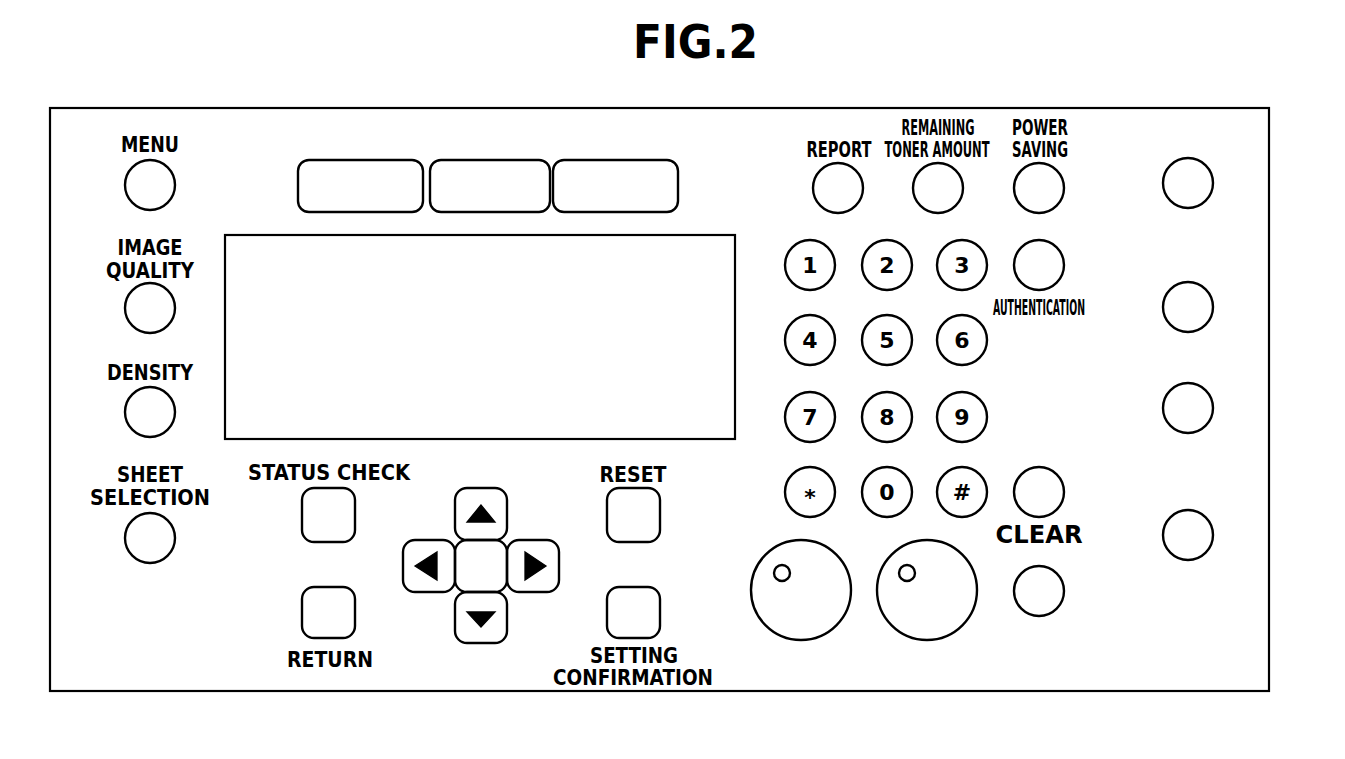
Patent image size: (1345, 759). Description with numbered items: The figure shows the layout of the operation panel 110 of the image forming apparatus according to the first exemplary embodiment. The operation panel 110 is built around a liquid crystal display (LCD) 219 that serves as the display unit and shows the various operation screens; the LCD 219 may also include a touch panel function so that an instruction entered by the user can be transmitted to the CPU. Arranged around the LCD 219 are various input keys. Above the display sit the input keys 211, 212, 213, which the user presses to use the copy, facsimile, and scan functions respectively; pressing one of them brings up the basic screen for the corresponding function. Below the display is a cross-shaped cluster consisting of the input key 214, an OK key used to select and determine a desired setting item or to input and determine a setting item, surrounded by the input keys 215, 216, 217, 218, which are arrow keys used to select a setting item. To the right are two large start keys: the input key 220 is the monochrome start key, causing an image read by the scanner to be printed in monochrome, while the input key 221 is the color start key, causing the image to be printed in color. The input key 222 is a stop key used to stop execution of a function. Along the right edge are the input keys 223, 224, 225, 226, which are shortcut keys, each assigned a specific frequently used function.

The operation panel 110 is at (288, 108).
The input key 211 is at (332, 160).
The input key 212 is at (465, 160).
The input key 213 is at (585, 160).
The input key 214 is at (463, 582).
The input key 215 is at (475, 488).
The input key 216 is at (480, 643).
The input key 217 is at (403, 566).
The input key 218 is at (559, 566).
The liquid crystal display 219 is at (714, 236).
The input key 220 is at (752, 610).
The input key 221 is at (888, 625).
The input key 222 is at (1064, 590).
The input key 223 is at (1213, 183).
The input key 224 is at (1213, 307).
The input key 225 is at (1213, 408).
The input key 226 is at (1213, 535).